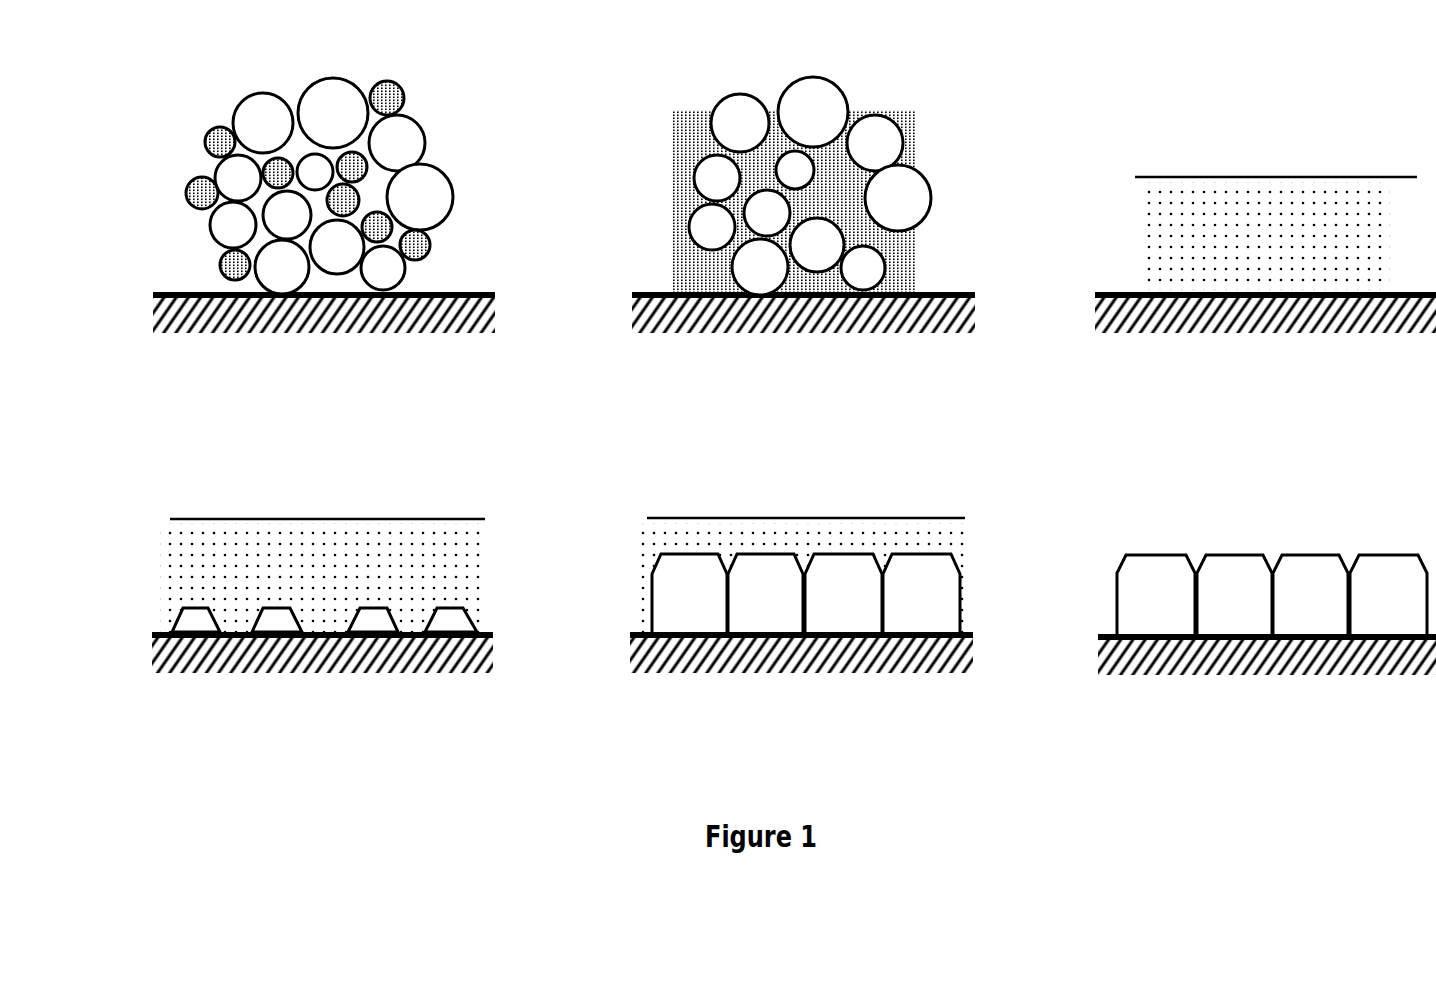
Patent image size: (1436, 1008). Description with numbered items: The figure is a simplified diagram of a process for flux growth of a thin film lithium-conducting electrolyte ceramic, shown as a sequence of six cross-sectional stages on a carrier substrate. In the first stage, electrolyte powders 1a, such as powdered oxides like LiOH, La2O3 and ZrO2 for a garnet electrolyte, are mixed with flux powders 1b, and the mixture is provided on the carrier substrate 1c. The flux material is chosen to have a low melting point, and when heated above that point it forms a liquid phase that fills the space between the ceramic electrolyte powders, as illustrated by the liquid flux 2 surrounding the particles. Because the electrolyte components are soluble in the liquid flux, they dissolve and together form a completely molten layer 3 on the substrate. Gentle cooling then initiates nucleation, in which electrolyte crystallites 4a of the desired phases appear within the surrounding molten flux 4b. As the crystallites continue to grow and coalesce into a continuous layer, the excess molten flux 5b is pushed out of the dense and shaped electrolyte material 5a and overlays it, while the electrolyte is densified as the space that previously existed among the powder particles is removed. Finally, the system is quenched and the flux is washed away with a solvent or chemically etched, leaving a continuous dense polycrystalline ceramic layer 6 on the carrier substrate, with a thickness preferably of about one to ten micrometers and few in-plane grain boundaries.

The electrolyte powders 1a is at (238, 102).
The flux powders 1b is at (188, 180).
The carrier substrate 1c is at (291, 312).
The liquid flux filling space between electrolyte powders 2 is at (693, 157).
The completely molten layer 3 is at (1247, 233).
The molten flux during nucleation 4b is at (195, 563).
The nucleated electrolyte crystallites 4a is at (175, 608).
The excess molten flux 5b is at (675, 542).
The dense and shaped electrolyte material 5a is at (665, 607).
The continuous dense polycrystalline ceramic layer 6 is at (1245, 594).